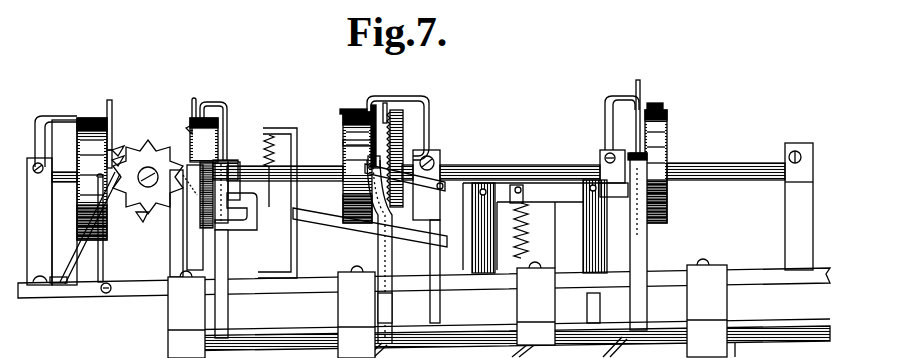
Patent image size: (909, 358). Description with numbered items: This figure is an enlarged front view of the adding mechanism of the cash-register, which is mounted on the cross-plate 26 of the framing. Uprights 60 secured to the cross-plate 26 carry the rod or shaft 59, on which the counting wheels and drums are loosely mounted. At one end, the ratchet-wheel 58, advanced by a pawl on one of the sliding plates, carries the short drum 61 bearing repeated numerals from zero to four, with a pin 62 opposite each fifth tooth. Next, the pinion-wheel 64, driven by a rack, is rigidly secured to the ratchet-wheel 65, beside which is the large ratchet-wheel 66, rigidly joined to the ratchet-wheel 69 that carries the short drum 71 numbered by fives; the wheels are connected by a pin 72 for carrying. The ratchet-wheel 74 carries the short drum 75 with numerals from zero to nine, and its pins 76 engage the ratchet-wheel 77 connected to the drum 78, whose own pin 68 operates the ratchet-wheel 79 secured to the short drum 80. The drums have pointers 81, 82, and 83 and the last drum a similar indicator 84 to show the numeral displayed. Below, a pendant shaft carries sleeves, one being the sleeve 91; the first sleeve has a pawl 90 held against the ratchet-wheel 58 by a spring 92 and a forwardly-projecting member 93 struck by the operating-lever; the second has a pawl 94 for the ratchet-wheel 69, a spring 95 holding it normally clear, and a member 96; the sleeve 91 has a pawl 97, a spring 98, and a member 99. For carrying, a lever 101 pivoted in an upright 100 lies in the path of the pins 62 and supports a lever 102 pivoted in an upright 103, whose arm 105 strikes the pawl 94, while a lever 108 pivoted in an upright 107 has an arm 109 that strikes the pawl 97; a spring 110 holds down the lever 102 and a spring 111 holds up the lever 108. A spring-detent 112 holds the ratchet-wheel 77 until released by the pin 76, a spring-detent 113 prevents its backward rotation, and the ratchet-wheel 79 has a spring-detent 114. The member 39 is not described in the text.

The cross-plate 26 is at (762, 270).
The frame member 39 is at (752, 349).
The ratchet-wheel 58 is at (637, 105).
The rod or shaft 59 is at (742, 166).
The uprights 60 is at (790, 201).
The short drum 61 is at (667, 133).
The pin 62 is at (637, 123).
The pinion-wheel 64 is at (432, 153).
The ratchet-wheel 65 is at (405, 145).
The large ratchet-wheel 66 is at (390, 100).
The pin 68 is at (112, 150).
The ratchet-wheel 69 is at (346, 120).
The short drum 71 is at (350, 143).
The pin 72 is at (374, 104).
The ratchet-wheel 74 is at (216, 124).
The short drum 75 is at (190, 130).
The pin 76 is at (194, 99).
The ratchet-wheel 77 is at (148, 177).
The drum 78 is at (143, 218).
The ratchet-wheel 79 is at (110, 112).
The short drum 80 is at (88, 122).
The pointer 81 is at (656, 106).
The pointer 82 is at (357, 108).
The pointer 83 is at (213, 103).
The indicator 84 is at (57, 118).
The pawl 90 is at (644, 252).
The sleeve 91 is at (208, 349).
The spring 92 is at (587, 317).
The forwardly-projecting member 93 is at (500, 338).
The pawl 94 is at (392, 298).
The spring 95 is at (430, 317).
The forwardly-projecting member 96 is at (500, 335).
The pawl 97 is at (224, 308).
The spring 98 is at (293, 307).
The forwardly-projecting member 99 is at (343, 350).
The upright 100 is at (515, 222).
The lever 101 is at (551, 180).
The lever 102 is at (512, 184).
The upright 103 is at (485, 275).
The arm 105 is at (366, 172).
The upright 107 is at (453, 258).
The lever 108 is at (328, 218).
The arm 109 is at (251, 226).
The spring 110 is at (526, 238).
The spring 111 is at (271, 137).
The spring-detent 112 is at (187, 245).
The spring-detent 113 is at (67, 283).
The spring-detent 114 is at (105, 270).